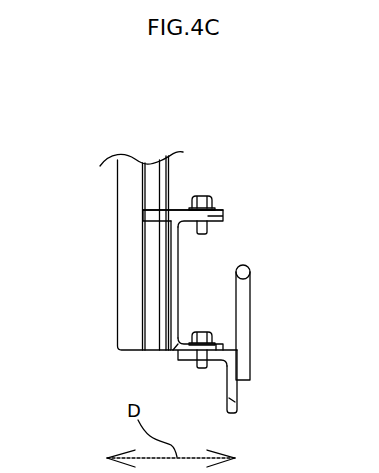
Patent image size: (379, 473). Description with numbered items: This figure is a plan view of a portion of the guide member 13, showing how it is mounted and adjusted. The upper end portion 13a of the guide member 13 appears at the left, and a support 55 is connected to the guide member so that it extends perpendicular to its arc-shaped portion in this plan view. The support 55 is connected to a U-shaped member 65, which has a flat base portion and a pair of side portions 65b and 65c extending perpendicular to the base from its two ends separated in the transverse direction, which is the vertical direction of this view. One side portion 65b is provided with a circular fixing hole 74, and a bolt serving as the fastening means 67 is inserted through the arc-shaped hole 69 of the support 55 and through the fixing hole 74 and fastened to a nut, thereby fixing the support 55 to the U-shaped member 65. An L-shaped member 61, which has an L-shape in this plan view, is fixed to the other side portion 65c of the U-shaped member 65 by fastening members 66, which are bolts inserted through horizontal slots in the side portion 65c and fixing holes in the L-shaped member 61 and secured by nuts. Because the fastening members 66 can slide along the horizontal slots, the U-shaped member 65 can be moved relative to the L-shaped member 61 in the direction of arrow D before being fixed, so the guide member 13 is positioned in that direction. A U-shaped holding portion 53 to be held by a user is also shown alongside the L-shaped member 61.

The guide member 13 is at (105, 251).
The upper end portion 13a is at (128, 247).
The U-shaped holding portion 53 is at (250, 305).
The support 55 is at (180, 207).
The L-shaped member 61 is at (232, 414).
The U-shaped member 65 is at (178, 265).
The side portion 65b is at (224, 215).
The other side portion 65c is at (218, 347).
The fastening members 66 is at (203, 332).
The fastening means 67 is at (212, 197).
The arc-shaped hole 69 is at (203, 197).
The fixing hole 74 is at (198, 233).